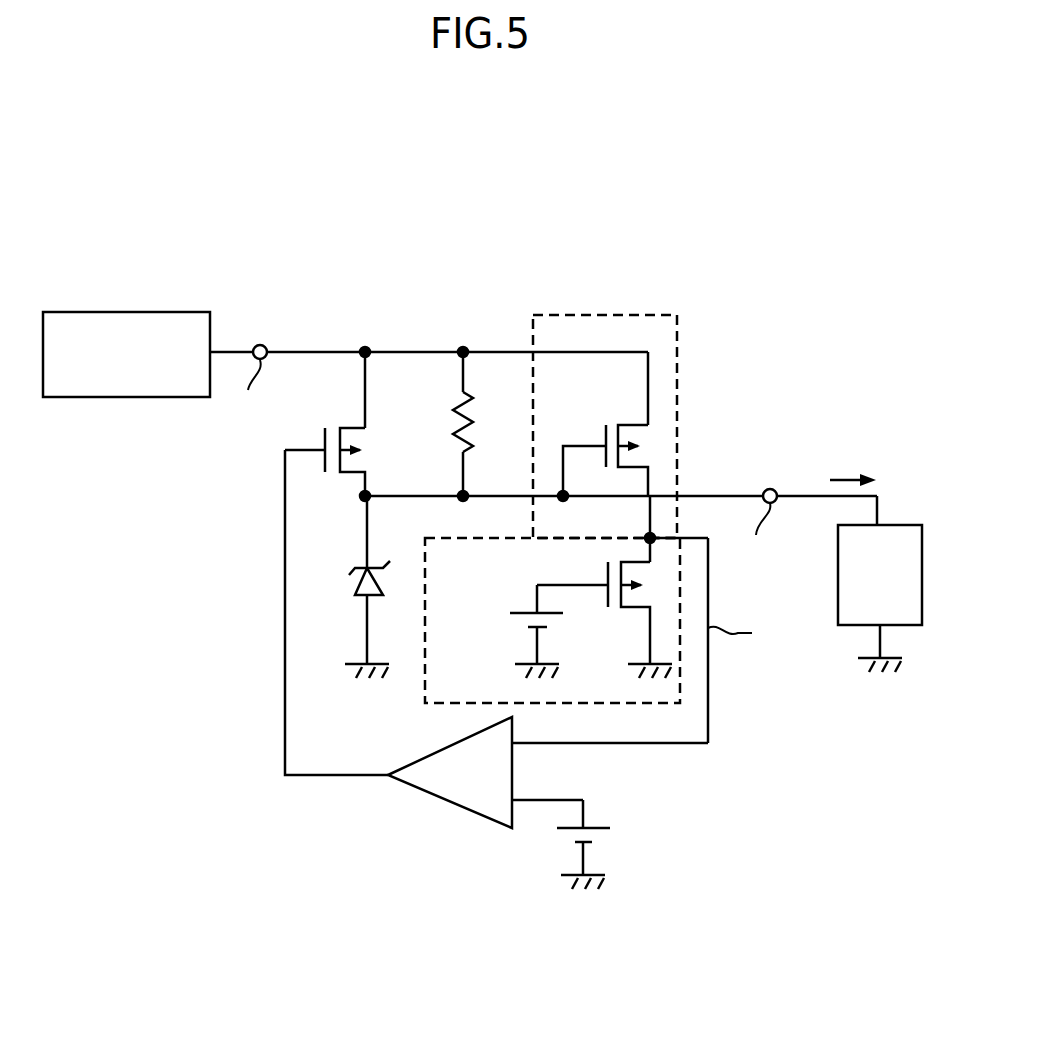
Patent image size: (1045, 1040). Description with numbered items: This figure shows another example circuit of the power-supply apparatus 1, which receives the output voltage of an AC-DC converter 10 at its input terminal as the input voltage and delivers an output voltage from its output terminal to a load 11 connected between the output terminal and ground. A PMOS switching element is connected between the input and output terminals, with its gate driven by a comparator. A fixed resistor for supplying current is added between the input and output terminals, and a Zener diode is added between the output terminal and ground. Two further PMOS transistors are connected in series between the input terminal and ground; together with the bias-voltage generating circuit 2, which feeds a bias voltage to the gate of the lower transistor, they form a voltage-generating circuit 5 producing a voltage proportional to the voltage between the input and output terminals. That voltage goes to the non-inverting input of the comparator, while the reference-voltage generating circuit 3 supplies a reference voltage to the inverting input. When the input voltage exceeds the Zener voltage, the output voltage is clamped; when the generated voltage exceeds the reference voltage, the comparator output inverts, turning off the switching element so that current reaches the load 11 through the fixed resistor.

The power-supply apparatus 1 is at (552, 232).
The bias-voltage generating circuit 2 is at (553, 622).
The reference-voltage generating circuit 3 is at (603, 833).
The voltage-generating circuit 5 is at (626, 320).
The AC-DC converter 10 is at (122, 312).
The load 11 is at (890, 522).